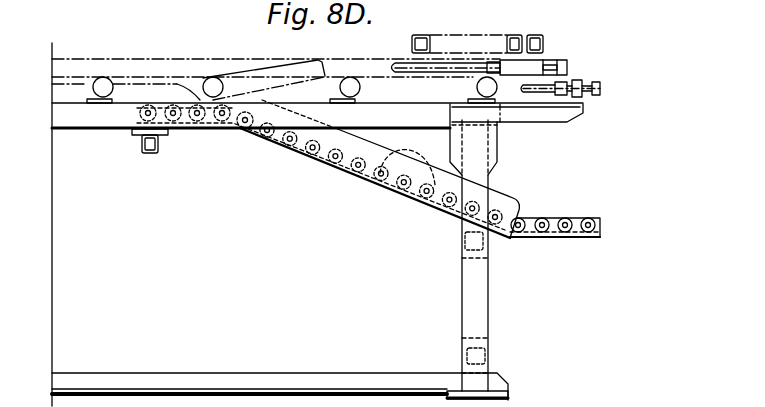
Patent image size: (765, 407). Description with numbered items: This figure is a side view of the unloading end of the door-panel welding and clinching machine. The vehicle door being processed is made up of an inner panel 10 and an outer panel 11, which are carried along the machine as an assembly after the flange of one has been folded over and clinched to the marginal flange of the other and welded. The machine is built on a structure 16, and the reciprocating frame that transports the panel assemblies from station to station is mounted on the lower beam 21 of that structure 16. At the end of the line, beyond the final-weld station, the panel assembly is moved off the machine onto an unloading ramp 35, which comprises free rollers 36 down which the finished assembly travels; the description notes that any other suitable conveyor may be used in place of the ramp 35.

The inner panel 10 is at (243, 78).
The outer panel 11 is at (245, 78).
The structure 16 is at (472, 280).
The lower beam 21 is at (119, 117).
The unloading ramp 35 is at (297, 156).
The free rollers 36 is at (407, 159).